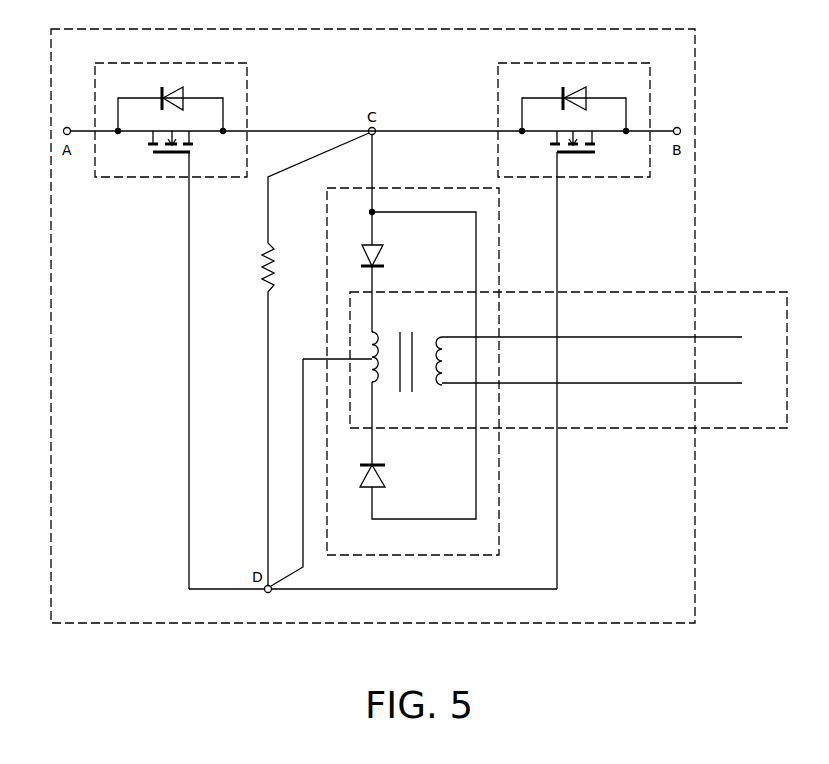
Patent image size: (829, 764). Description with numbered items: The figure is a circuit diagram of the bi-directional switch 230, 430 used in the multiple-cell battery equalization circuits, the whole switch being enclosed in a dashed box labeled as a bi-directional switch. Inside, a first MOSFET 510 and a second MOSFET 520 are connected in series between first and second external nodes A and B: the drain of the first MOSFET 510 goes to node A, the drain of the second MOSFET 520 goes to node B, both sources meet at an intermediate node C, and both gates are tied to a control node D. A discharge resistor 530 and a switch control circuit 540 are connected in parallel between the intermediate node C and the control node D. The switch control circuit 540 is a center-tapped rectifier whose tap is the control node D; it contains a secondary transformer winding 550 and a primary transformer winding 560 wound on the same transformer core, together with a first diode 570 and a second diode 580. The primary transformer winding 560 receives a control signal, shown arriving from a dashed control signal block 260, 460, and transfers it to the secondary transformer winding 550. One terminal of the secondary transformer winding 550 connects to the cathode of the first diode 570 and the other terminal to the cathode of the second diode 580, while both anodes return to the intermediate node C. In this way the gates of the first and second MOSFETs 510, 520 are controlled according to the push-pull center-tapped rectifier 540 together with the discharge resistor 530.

The bi-directional switch 230 is at (373, 346).
The bi-directional switch 430 is at (140, 623).
The control signal source 260 is at (568, 379).
The control signal source 460 is at (715, 428).
The first MOSFET 510 is at (140, 177).
The second MOSFET 520 is at (605, 177).
The discharge resistor 530 is at (258, 272).
The switch control circuit 540 is at (499, 463).
The secondary transformer winding 550 is at (378, 332).
The primary transformer winding 560 is at (432, 388).
The first diode 570 is at (385, 266).
The second diode 580 is at (385, 465).